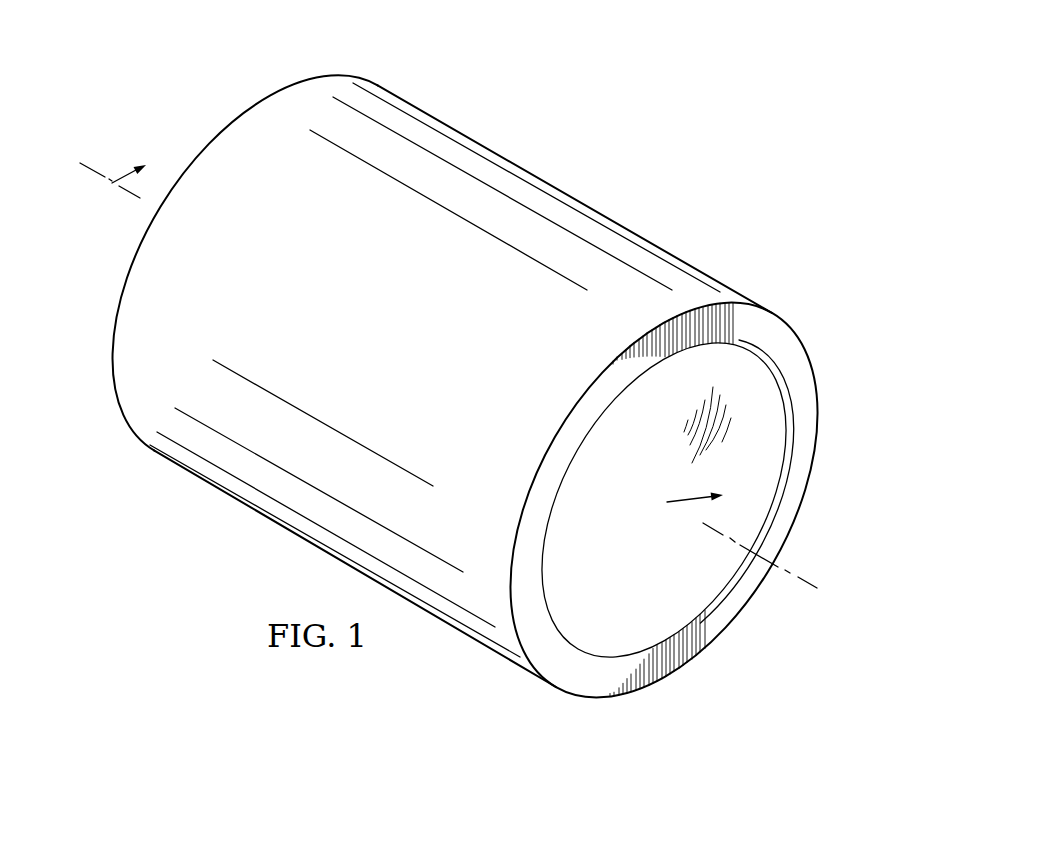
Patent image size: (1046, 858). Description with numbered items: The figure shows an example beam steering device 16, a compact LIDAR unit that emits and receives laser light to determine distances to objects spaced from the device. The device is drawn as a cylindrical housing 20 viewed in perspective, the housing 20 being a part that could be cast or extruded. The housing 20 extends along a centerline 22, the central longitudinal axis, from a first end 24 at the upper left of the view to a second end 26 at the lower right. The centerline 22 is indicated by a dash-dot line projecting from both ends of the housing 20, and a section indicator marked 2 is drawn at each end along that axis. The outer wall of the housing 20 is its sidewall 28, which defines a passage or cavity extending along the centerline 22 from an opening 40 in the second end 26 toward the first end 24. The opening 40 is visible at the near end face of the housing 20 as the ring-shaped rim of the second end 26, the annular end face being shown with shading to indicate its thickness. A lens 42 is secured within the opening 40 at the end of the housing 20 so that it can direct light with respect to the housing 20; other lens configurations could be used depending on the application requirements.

The beam steering device 16 is at (603, 135).
The housing 20 is at (636, 222).
The centerline 22 is at (810, 578).
The first end 24 is at (250, 78).
The second end 26 is at (663, 712).
The sidewall 28 is at (507, 160).
The opening 40 is at (787, 383).
The lens 42 is at (697, 588).
The section line 2- 2 is at (410, 325).